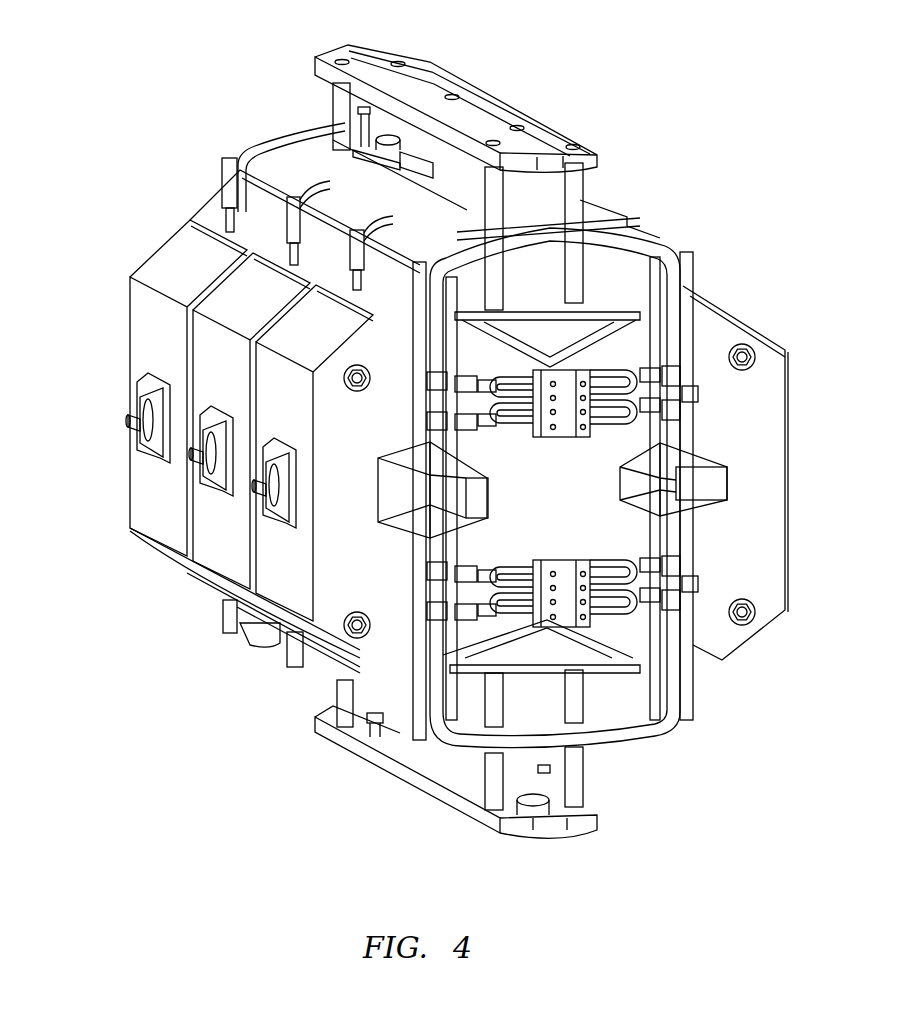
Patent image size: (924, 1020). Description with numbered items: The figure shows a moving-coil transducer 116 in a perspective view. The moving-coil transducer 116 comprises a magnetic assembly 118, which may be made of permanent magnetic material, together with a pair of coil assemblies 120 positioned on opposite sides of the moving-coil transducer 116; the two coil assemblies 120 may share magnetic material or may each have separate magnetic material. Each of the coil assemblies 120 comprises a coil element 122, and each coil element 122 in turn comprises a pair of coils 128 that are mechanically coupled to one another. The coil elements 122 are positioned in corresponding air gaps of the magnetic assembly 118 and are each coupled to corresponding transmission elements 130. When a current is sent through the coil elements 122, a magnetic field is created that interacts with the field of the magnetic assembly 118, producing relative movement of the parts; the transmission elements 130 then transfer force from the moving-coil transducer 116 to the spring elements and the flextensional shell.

The moving-coil transducer 116 is at (706, 729).
The magnetic assembly 118 is at (787, 482).
The coil assemblies 120 is at (665, 203).
The coil element 122 is at (712, 462).
The coils 128 is at (531, 418).
The transmission elements 130 is at (512, 102).